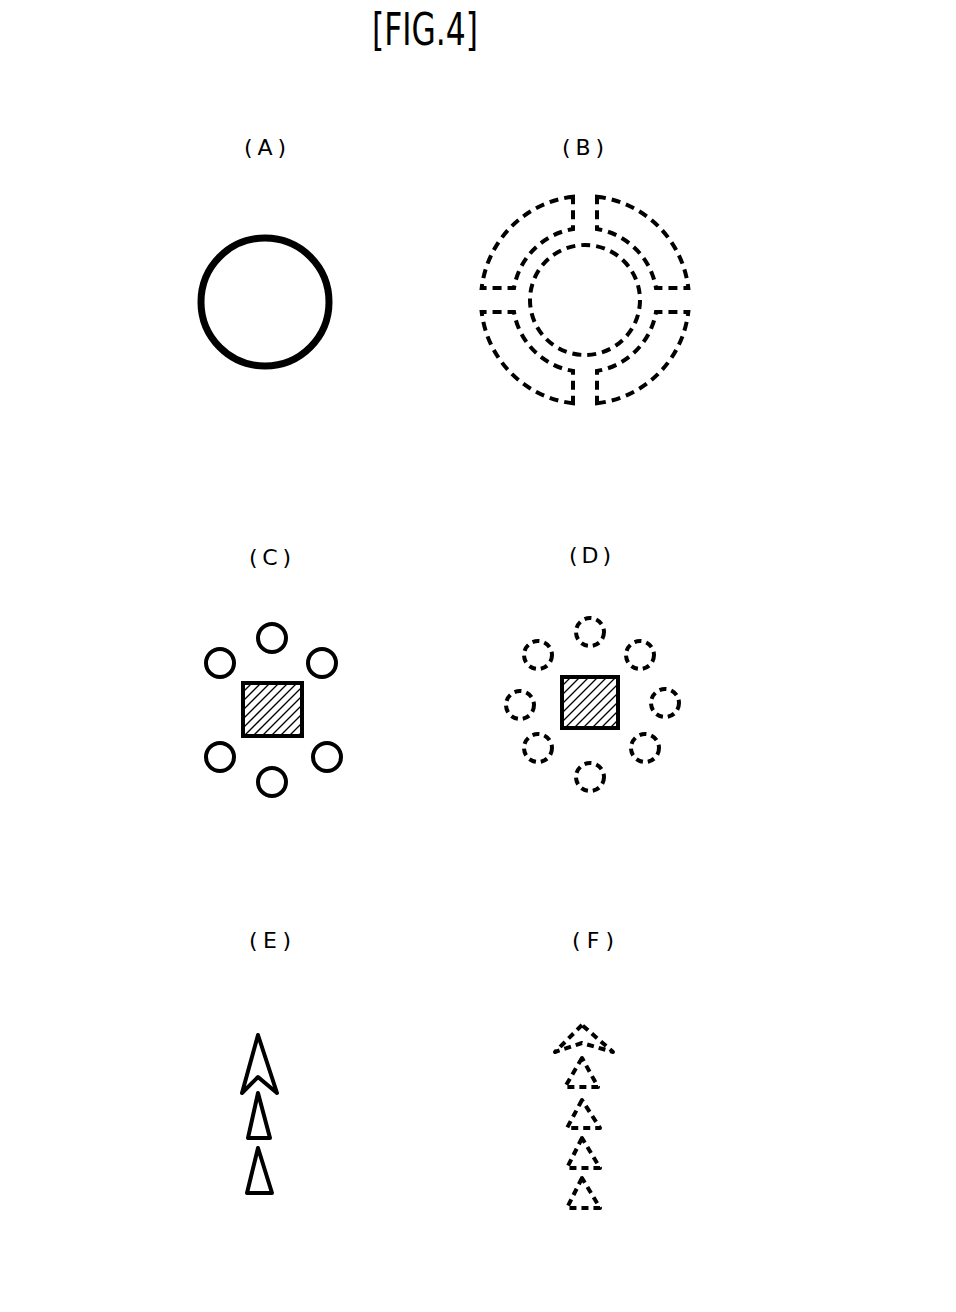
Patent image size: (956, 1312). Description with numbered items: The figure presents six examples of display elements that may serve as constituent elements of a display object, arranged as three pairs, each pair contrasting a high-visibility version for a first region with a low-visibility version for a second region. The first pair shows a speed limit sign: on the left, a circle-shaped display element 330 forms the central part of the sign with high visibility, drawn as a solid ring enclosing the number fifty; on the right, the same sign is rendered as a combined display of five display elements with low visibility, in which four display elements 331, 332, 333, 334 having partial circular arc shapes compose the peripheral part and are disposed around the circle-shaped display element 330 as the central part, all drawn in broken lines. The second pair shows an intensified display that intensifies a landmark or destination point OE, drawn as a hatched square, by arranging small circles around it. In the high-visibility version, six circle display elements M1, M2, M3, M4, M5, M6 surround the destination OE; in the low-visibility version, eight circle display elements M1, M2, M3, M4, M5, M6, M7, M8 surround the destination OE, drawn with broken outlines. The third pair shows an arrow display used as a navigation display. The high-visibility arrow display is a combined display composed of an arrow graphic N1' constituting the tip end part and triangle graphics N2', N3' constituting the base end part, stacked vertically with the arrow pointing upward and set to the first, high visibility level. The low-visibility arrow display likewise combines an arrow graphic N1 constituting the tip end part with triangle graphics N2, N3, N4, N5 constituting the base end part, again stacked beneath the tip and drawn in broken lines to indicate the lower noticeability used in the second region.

The display element 330 is at (203, 273).
The display element 331 is at (505, 238).
The display element 332 is at (668, 237).
The display element 333 is at (655, 380).
The display element 334 is at (503, 365).
The destination OE is at (262, 735).
The circle display element M1 is at (368, 647).
The circle display element M2 is at (432, 620).
The circle display element M3 is at (489, 647).
The circle display element M4 is at (367, 768).
The circle display element M5 is at (432, 795).
The circle display element M6 is at (492, 768).
The circle display element M7 is at (500, 705).
The circle display element M8 is at (685, 703).
The arrow graphic N1' is at (280, 1064).
The triangle graphic N2' is at (283, 1115).
The triangle graphic N3' is at (283, 1170).
The arrow graphic N1 is at (600, 1036).
The triangle graphic N2 is at (605, 1073).
The triangle graphic N3 is at (606, 1114).
The triangle graphic N4 is at (606, 1153).
The triangle graphic N5 is at (606, 1195).